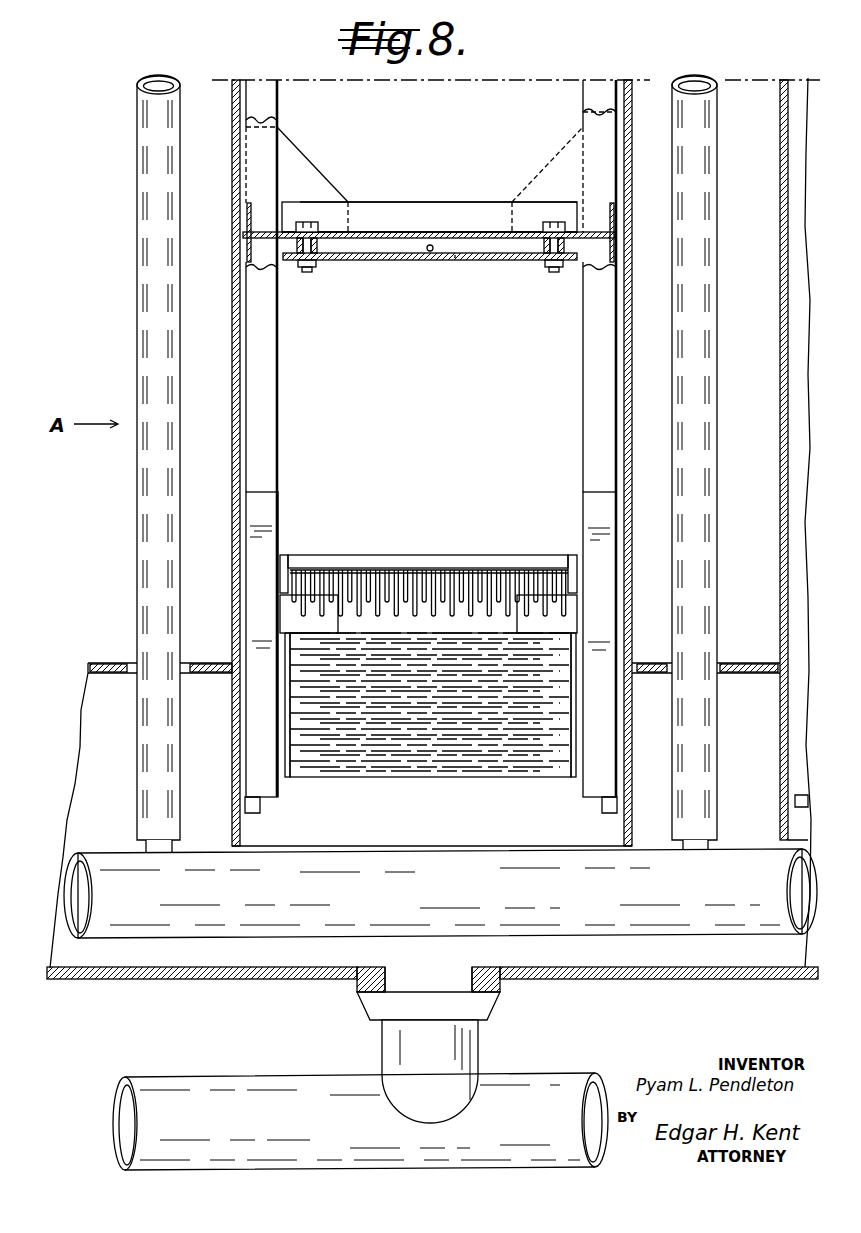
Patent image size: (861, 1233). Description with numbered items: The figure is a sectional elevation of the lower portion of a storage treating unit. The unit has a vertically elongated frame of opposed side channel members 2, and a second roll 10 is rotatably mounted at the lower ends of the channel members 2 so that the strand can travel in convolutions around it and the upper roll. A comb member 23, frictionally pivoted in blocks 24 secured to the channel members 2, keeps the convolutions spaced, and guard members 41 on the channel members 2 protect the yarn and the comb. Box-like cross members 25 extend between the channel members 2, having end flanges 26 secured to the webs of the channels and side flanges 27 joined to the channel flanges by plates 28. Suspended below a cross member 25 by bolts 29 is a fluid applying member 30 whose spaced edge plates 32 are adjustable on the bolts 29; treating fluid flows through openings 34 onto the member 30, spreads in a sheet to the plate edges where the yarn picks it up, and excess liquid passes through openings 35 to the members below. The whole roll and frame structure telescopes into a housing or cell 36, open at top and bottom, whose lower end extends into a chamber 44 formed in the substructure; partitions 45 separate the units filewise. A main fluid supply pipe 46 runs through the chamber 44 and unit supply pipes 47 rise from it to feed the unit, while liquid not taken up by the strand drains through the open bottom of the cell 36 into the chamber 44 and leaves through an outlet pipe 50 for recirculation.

The side channel members 2 is at (270, 103).
The second roll 10 is at (481, 782).
The comb members 23 is at (426, 546).
The blocks 24 is at (284, 558).
The box-like cross members 25 is at (434, 232).
The end flanges 26 is at (250, 205).
The side flanges 27 is at (392, 201).
The plates 28 is at (303, 171).
The bolts 29 is at (305, 273).
The fluid applying members 30 is at (375, 271).
The edge plates 32 is at (431, 262).
The openings 34 is at (403, 232).
The openings 35 is at (507, 260).
The housing or cell 36 is at (628, 402).
The guard members 41 is at (258, 547).
The chamber 44 is at (432, 528).
The partitions 45 is at (102, 708).
The main fluid supply pipes 46 is at (748, 858).
The unit supply pipes 47 is at (155, 521).
The outlet pipes 50 is at (365, 1093).